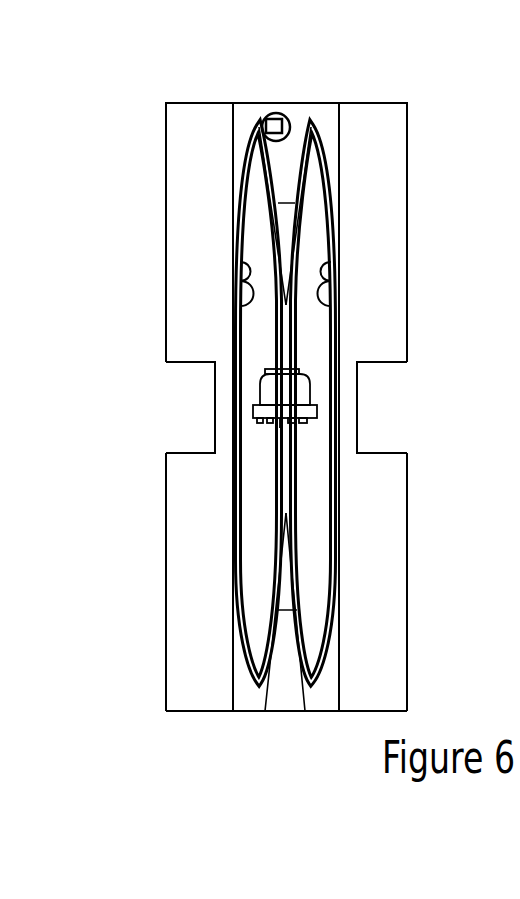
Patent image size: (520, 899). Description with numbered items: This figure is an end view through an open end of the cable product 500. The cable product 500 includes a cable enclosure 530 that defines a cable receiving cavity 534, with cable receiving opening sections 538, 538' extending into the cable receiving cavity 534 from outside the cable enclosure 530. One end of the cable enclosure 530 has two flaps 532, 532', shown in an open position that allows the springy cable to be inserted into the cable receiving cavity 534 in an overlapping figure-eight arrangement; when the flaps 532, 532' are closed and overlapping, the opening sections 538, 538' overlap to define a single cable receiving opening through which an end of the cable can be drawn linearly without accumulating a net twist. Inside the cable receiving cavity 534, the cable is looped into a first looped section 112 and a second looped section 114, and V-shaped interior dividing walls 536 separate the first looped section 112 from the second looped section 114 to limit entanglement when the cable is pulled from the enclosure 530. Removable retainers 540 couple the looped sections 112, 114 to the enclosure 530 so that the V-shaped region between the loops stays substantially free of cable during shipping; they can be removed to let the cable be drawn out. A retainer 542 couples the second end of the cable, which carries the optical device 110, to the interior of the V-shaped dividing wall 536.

The cable product 500 is at (405, 75).
The flap 532' is at (191, 407).
The flap 532 is at (377, 407).
The cable receiving opening section 538' is at (155, 407).
The cable receiving opening section 538 is at (409, 396).
The cable enclosure 530 is at (245, 712).
The interior dividing walls 536 is at (305, 122).
The first looped section 112 is at (260, 126).
The second looped section 114 is at (338, 224).
The cable receiving cavity 534 is at (313, 477).
The retainer 542 is at (278, 113).
The removable retainers 540 is at (239, 300).
The optical device 110 is at (301, 391).